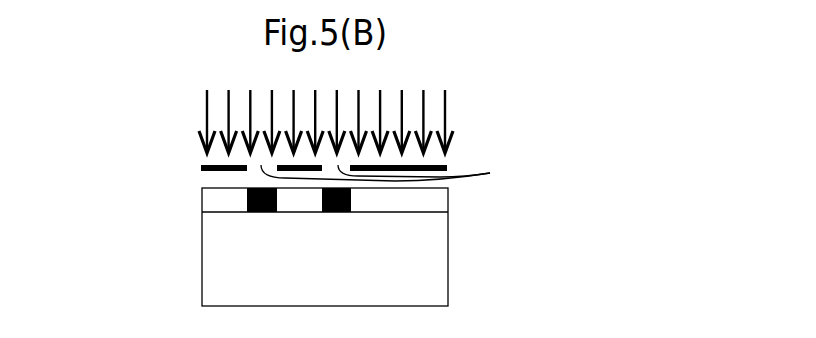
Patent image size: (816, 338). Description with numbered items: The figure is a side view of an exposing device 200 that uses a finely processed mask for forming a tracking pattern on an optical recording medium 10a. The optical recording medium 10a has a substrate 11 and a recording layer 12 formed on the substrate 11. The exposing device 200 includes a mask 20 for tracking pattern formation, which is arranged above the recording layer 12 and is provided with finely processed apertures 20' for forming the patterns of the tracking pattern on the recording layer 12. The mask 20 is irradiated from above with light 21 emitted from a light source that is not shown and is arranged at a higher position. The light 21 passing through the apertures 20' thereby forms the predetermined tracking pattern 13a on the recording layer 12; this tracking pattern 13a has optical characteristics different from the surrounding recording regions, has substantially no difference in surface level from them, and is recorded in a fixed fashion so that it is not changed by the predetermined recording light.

The light 21 is at (445, 119).
The exposing device 200 is at (285, 140).
The mask 20 is at (288, 159).
The apertures 20' is at (395, 174).
The optical recording medium 10a is at (275, 245).
The substrate 11 is at (437, 250).
The recording layer 12 is at (435, 201).
The tracking pattern 13a is at (247, 202).